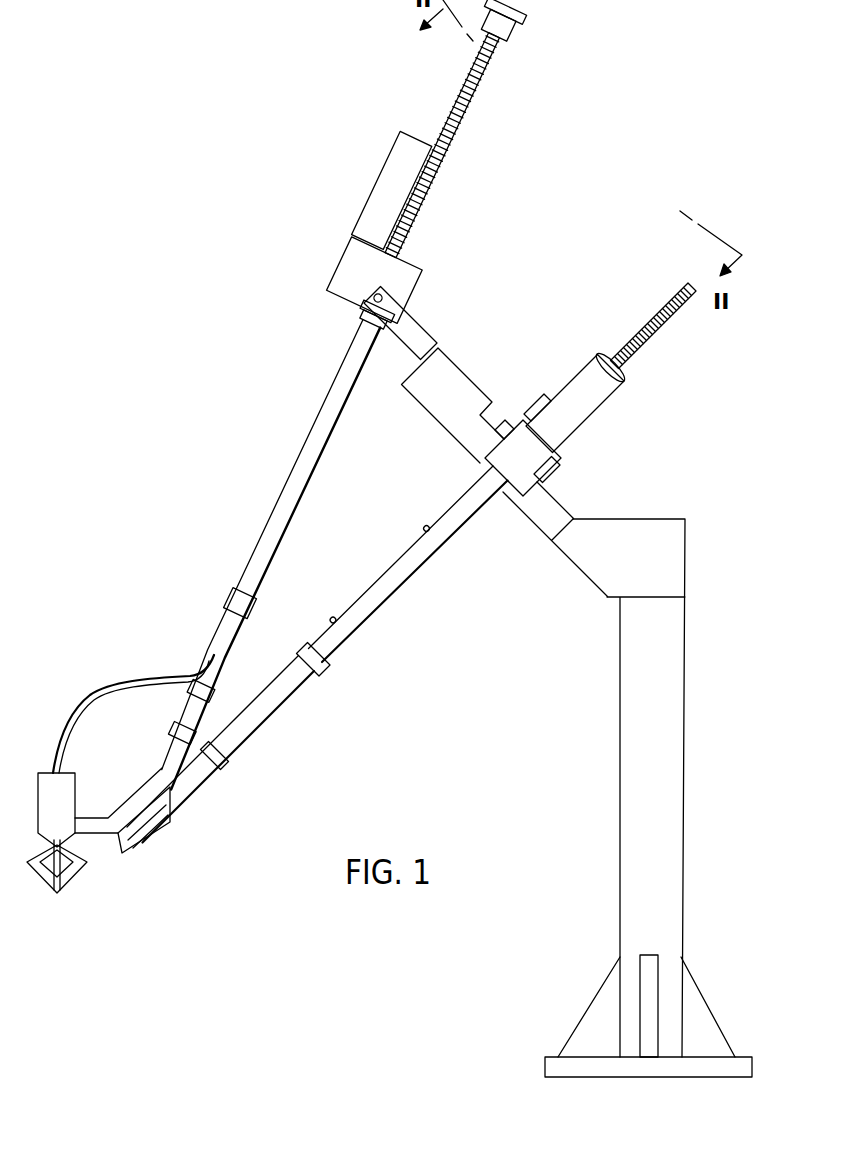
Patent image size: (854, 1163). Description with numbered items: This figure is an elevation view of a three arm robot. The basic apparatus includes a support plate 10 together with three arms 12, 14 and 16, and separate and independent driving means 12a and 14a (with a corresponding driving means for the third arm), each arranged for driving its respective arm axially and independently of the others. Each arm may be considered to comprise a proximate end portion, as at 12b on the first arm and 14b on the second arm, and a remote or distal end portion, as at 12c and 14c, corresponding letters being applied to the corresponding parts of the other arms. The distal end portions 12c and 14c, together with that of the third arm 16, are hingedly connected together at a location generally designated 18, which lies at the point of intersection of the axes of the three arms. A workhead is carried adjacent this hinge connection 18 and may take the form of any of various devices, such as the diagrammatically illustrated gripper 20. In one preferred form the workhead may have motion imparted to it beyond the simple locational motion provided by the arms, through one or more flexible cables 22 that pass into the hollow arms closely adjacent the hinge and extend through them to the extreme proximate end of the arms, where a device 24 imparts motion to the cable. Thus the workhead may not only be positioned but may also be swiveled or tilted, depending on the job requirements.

The support plate 10 is at (442, 423).
The first arm 12 is at (335, 378).
The driving means 12a is at (388, 148).
The proximate end portion 12b is at (455, 132).
The distal end portion 12c is at (218, 630).
The second arm 14 is at (478, 505).
The driving means 14a is at (582, 378).
The proximate end portion 14b is at (665, 303).
The distal end portion 14c is at (262, 722).
The third arm 16 is at (395, 600).
The hinge connection 18 is at (123, 851).
The gripper 20 is at (75, 787).
The flexible cable 22 is at (118, 683).
The cable motion device 24 is at (550, 2).